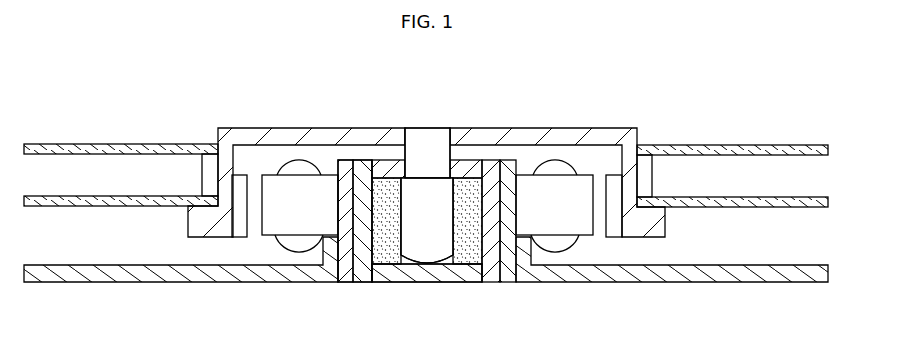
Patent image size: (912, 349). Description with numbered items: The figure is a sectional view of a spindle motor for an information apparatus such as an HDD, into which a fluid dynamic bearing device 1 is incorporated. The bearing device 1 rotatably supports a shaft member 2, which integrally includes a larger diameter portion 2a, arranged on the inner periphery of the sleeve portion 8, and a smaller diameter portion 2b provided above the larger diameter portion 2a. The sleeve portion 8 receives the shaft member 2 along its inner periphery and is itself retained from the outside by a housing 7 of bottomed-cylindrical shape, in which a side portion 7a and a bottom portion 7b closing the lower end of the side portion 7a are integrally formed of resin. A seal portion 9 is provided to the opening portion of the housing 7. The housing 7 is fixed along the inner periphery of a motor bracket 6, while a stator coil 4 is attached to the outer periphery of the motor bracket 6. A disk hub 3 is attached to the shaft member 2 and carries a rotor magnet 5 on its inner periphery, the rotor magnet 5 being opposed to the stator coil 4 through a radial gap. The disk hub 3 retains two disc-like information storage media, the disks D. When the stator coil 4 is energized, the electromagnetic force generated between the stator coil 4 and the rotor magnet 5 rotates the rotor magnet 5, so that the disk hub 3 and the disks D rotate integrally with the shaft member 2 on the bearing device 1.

The fluid dynamic bearing device 1 is at (486, 167).
The shaft member 2 is at (442, 126).
The larger diameter portion 2a is at (410, 250).
The smaller diameter portion 2b is at (417, 150).
The disk hub 3 is at (608, 137).
The stator coil 4 is at (587, 230).
The rotor magnet 5 is at (614, 228).
The motor bracket 6 is at (510, 267).
The housing 7 is at (356, 157).
The side portion 7a is at (362, 240).
The bottom portion 7b is at (453, 270).
The sleeve portion 8 is at (467, 170).
The seal portion 9 is at (386, 170).
The disks D is at (752, 147).